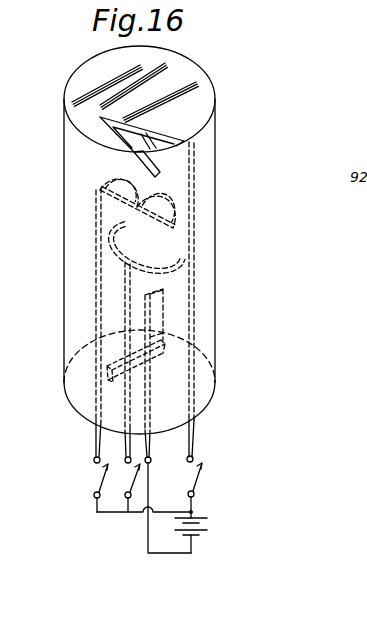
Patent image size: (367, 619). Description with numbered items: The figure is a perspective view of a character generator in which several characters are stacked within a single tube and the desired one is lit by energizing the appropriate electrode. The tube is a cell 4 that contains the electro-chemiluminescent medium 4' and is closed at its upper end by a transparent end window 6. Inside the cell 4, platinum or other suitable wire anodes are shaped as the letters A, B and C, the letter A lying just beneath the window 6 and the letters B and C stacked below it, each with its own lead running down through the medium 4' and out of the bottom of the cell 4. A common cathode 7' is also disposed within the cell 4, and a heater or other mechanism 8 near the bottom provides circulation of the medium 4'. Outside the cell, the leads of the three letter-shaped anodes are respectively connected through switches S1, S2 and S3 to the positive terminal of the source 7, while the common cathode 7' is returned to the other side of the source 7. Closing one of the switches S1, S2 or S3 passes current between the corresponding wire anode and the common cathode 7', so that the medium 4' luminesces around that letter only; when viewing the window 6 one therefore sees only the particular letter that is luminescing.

The transparent end window 6 is at (198, 112).
The cell 4 is at (153, 266).
The electro-chemiluminescent medium 4' is at (214, 299).
The common cathode 7' is at (200, 373).
The heater or other mechanism 8 is at (158, 360).
The source 7 is at (201, 535).
The switch S1 is at (204, 490).
The switch S2 is at (89, 487).
The switch S3 is at (126, 488).